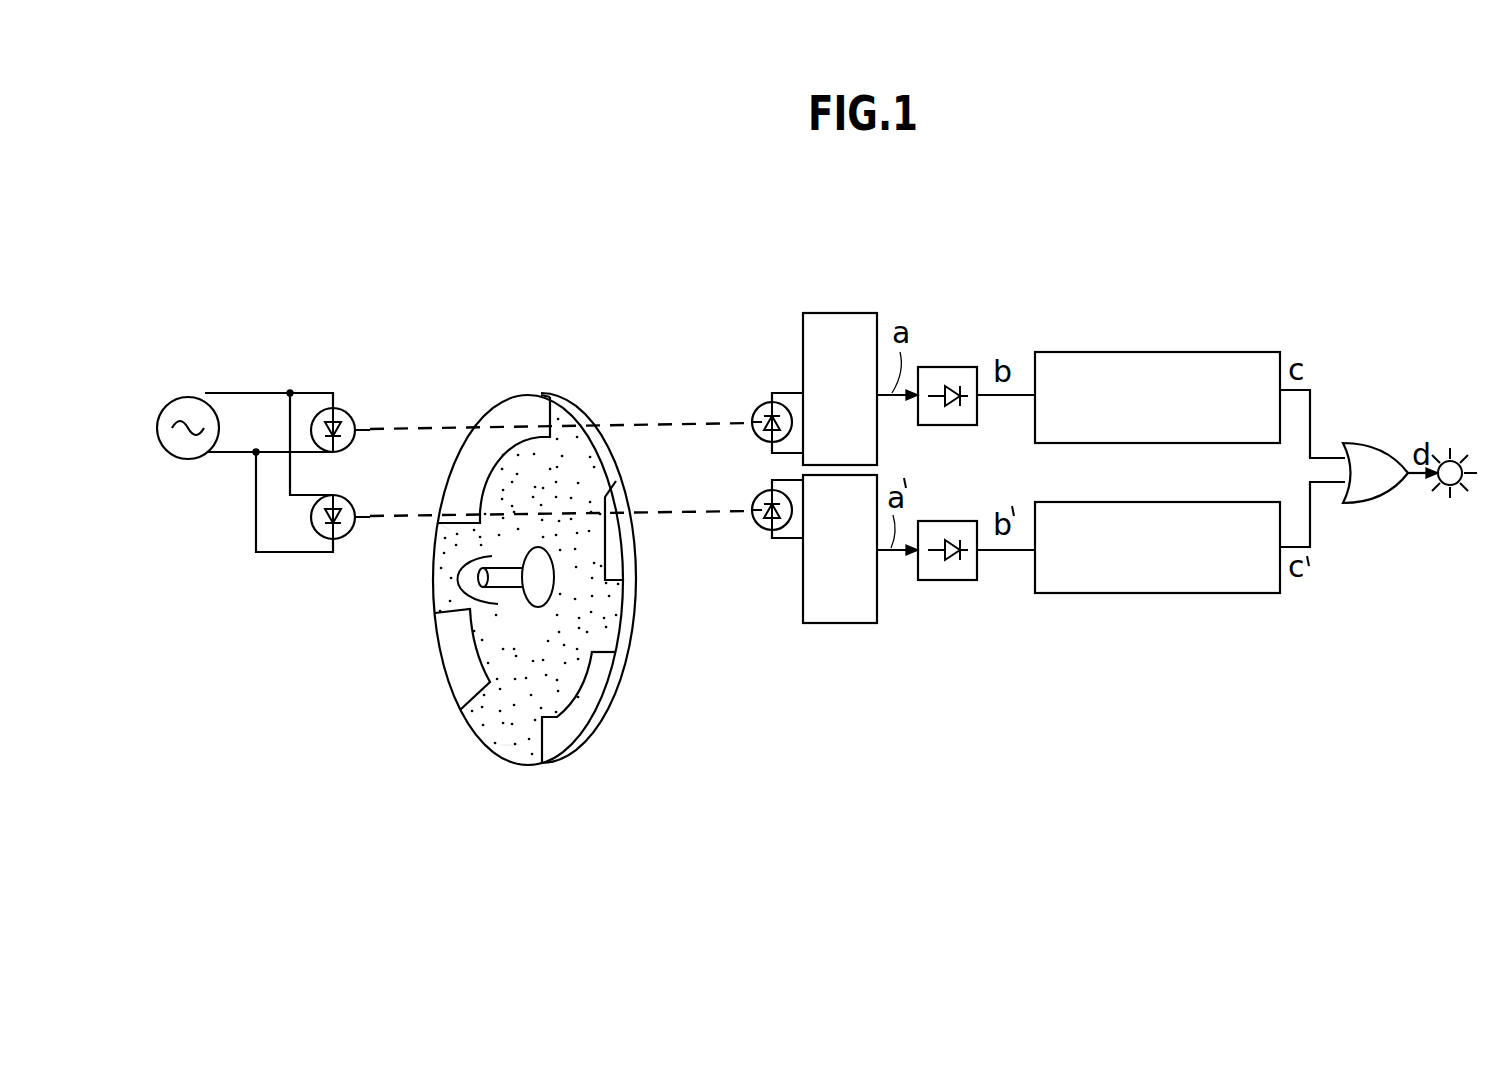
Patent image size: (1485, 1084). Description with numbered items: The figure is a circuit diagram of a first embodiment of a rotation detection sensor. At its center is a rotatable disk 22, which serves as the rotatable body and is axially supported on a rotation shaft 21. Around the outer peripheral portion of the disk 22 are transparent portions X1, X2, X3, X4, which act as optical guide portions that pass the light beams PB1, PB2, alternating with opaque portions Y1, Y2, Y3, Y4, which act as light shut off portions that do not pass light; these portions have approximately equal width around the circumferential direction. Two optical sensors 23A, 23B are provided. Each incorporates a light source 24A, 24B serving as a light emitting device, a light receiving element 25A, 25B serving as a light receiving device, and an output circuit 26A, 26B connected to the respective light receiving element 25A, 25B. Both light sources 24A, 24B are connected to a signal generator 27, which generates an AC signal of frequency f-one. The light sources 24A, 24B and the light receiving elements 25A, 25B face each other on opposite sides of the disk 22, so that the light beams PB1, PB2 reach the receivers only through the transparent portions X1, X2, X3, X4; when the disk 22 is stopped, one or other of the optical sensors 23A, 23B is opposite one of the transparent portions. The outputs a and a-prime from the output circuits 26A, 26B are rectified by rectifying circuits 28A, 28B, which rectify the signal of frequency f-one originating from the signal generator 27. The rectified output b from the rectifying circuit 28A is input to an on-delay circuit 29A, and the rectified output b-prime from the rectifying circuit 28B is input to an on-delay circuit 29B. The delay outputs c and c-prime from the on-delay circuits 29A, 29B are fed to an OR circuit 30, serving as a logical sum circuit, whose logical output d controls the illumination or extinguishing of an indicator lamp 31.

The rotation shaft 21 is at (495, 600).
The rotatable disk 22 is at (623, 615).
The optical sensor 23A is at (834, 350).
The optical sensor 23B is at (797, 601).
The light source 24A is at (346, 406).
The light source 24B is at (340, 540).
The light receiving element 25A is at (762, 403).
The light receiving element 25B is at (757, 532).
The output circuit 26A is at (876, 320).
The output circuit 26B is at (805, 615).
The signal generator 27 is at (188, 407).
The rectifying circuit 28A is at (965, 375).
The rectifying circuit 28B is at (938, 586).
The on-delay circuit 29A is at (1180, 351).
The on-delay circuit 29B is at (1177, 595).
The OR circuit 30 is at (1352, 447).
The indicator lamp 31 is at (1452, 460).
The light beam PB1 is at (378, 432).
The light beam PB2 is at (377, 514).
The transparent portion X1 is at (640, 578).
The transparent portion X2 is at (560, 740).
The transparent portion X3 is at (452, 655).
The transparent portion X4 is at (533, 412).
The opaque portion Y1 is at (617, 653).
The opaque portion Y2 is at (509, 745).
The opaque portion Y3 is at (452, 546).
The opaque portion Y4 is at (577, 400).